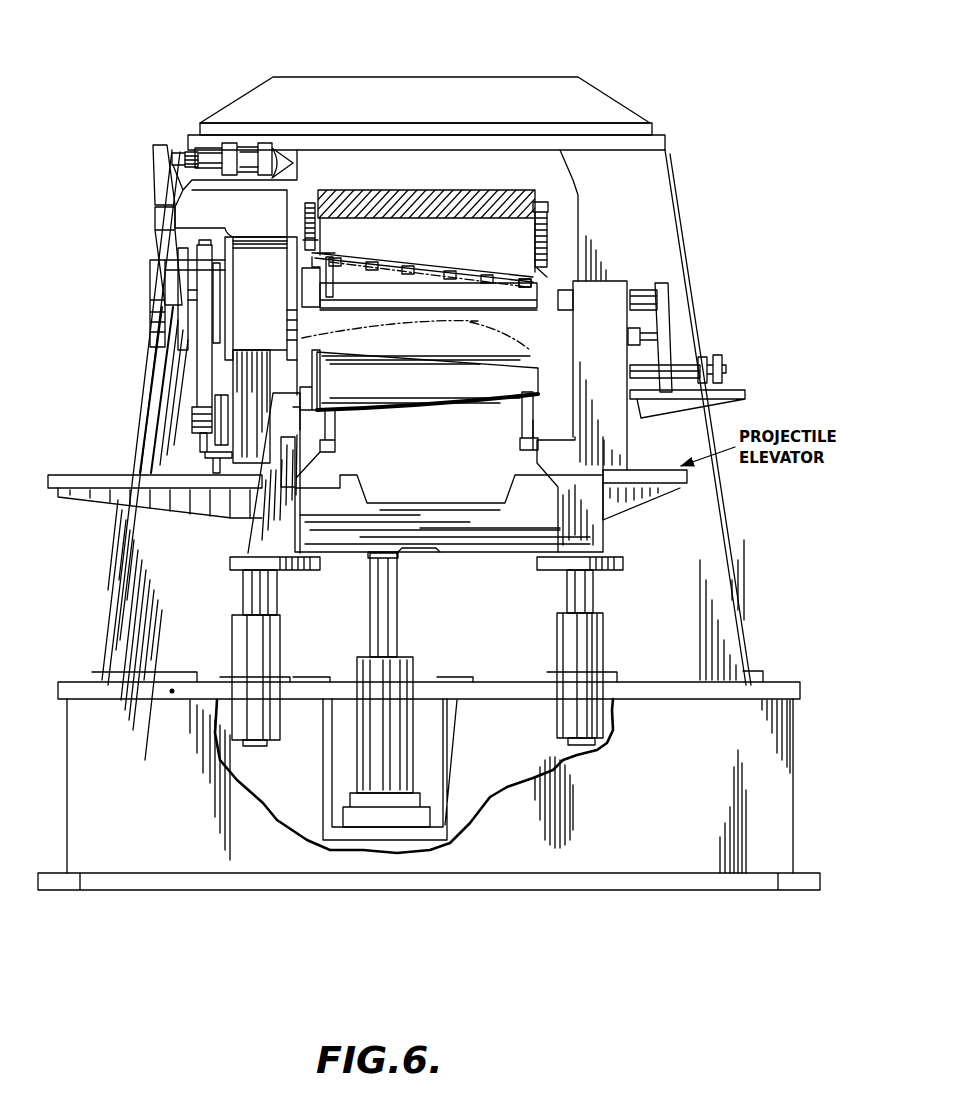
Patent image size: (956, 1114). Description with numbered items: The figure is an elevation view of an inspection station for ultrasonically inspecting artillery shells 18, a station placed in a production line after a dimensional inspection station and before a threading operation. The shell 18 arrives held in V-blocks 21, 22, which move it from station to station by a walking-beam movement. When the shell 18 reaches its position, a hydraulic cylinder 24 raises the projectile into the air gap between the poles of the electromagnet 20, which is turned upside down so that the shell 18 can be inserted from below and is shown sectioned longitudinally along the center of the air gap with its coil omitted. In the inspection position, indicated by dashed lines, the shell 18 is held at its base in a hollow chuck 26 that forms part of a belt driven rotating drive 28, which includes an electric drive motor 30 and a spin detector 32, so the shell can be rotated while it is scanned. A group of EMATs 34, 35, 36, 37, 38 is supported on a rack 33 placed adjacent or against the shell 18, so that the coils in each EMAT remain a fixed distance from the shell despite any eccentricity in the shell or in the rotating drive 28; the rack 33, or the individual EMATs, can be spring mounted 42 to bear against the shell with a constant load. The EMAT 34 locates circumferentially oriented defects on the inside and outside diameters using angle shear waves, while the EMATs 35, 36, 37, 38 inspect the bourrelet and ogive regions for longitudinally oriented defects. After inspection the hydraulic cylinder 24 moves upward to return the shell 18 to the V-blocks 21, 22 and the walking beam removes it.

The artillery shell 18 is at (429, 453).
The electromagnet 20 is at (490, 190).
The V-block 21 is at (337, 432).
The V-block 22 is at (520, 415).
The hydraulic cylinder 24 is at (412, 673).
The hollow chuck 26 is at (298, 360).
The belt driven rotating drive 28 is at (130, 282).
The electric drive motor 30 is at (223, 440).
The spin detector 32 is at (148, 128).
The rack 33 is at (441, 254).
The EMAT 34 is at (363, 252).
The EMAT 35 is at (331, 295).
The EMAT 36 is at (407, 260).
The EMAT 37 is at (457, 265).
The EMAT 38 is at (525, 270).
The spring mounting 42 is at (549, 233).